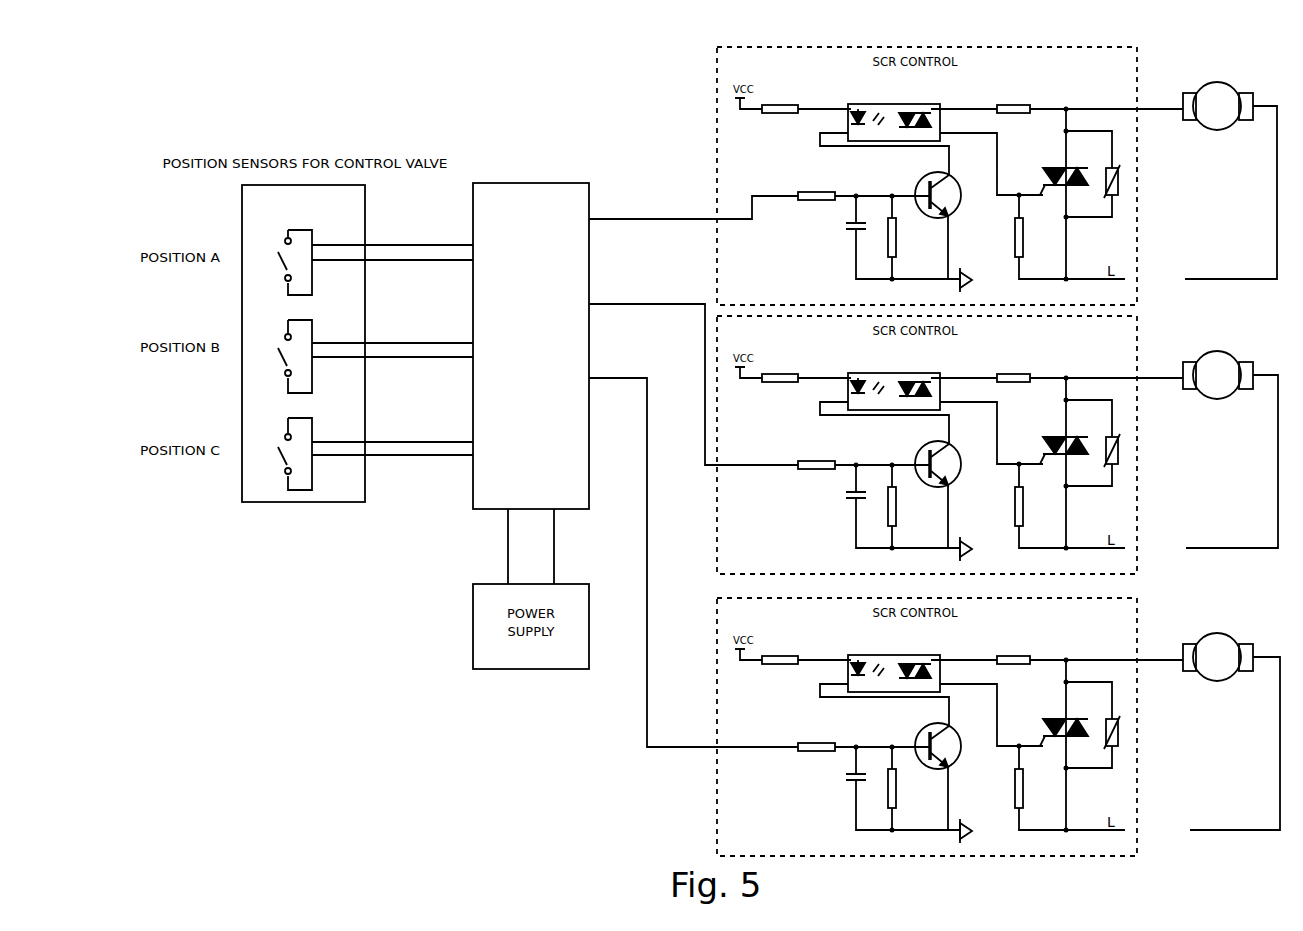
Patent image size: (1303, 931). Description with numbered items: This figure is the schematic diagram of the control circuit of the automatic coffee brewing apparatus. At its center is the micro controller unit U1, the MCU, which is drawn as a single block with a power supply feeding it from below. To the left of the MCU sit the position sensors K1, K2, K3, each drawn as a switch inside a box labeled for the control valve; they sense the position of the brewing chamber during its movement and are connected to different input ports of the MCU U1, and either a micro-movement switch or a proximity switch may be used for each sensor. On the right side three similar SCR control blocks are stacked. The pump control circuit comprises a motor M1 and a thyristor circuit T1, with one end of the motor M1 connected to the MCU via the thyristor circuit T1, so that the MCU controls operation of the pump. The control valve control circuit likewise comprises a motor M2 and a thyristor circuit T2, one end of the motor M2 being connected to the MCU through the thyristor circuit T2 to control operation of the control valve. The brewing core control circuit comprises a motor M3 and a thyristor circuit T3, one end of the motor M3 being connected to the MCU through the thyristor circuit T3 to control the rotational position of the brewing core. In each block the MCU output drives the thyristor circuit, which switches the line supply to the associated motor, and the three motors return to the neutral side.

The MCU (microcontroller unit) U1 is at (531, 329).
The position sensor K1 is at (367, 258).
The position sensor K2 is at (367, 356).
The position sensor K3 is at (367, 454).
The thyristor circuit T1 is at (1054, 163).
The thyristor circuit T2 is at (1054, 432).
The thyristor circuit T3 is at (1054, 714).
The motor M1 is at (1221, 175).
The motor M2 is at (1221, 441).
The motor M3 is at (1217, 717).